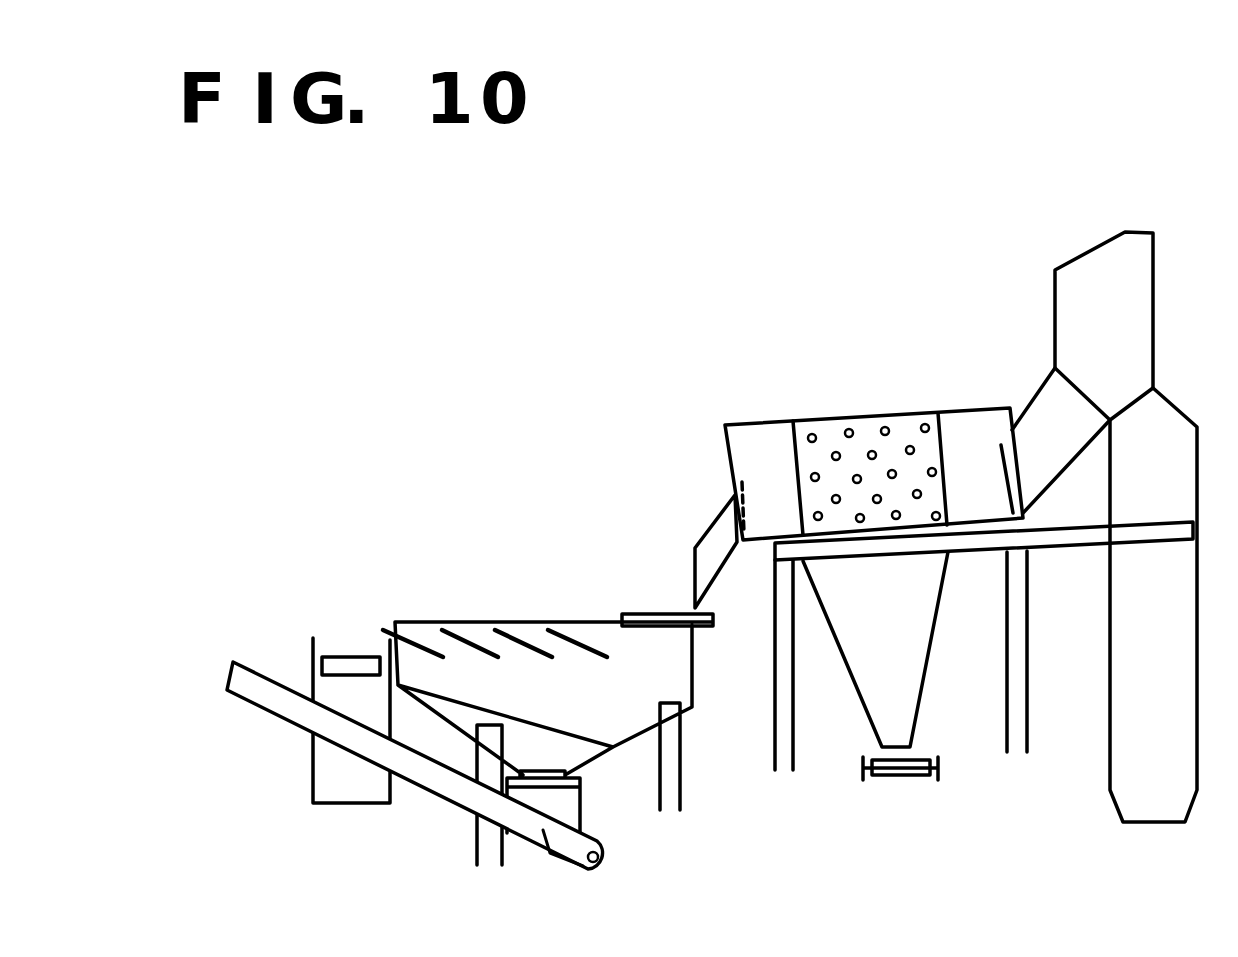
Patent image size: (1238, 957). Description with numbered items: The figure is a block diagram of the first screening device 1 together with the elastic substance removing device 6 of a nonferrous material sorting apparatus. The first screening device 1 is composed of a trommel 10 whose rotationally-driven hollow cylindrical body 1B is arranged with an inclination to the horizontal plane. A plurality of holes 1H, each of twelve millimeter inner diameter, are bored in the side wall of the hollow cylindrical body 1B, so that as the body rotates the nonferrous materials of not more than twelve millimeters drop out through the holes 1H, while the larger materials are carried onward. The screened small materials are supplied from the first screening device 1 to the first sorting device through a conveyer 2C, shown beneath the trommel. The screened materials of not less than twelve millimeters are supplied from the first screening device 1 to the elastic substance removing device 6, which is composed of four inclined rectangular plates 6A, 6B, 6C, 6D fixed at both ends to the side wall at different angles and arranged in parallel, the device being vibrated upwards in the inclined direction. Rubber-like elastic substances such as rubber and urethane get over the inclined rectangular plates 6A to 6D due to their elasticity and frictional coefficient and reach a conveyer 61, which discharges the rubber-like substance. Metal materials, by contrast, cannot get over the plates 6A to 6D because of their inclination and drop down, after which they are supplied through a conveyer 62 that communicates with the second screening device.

The first screening device 1 is at (738, 278).
The trommel 10 is at (833, 391).
The holes 1H is at (909, 450).
The hollow cylindrical body 1B is at (970, 430).
The conveyer 2C is at (903, 772).
The elastic substance removing device 6 is at (527, 575).
The inclined rectangular plate 6A is at (602, 627).
The inclined rectangular plate 6B is at (530, 627).
The inclined rectangular plate 6C is at (475, 625).
The inclined rectangular plate 6D is at (420, 623).
The conveyer 61 is at (345, 655).
The conveyer 62 is at (420, 827).